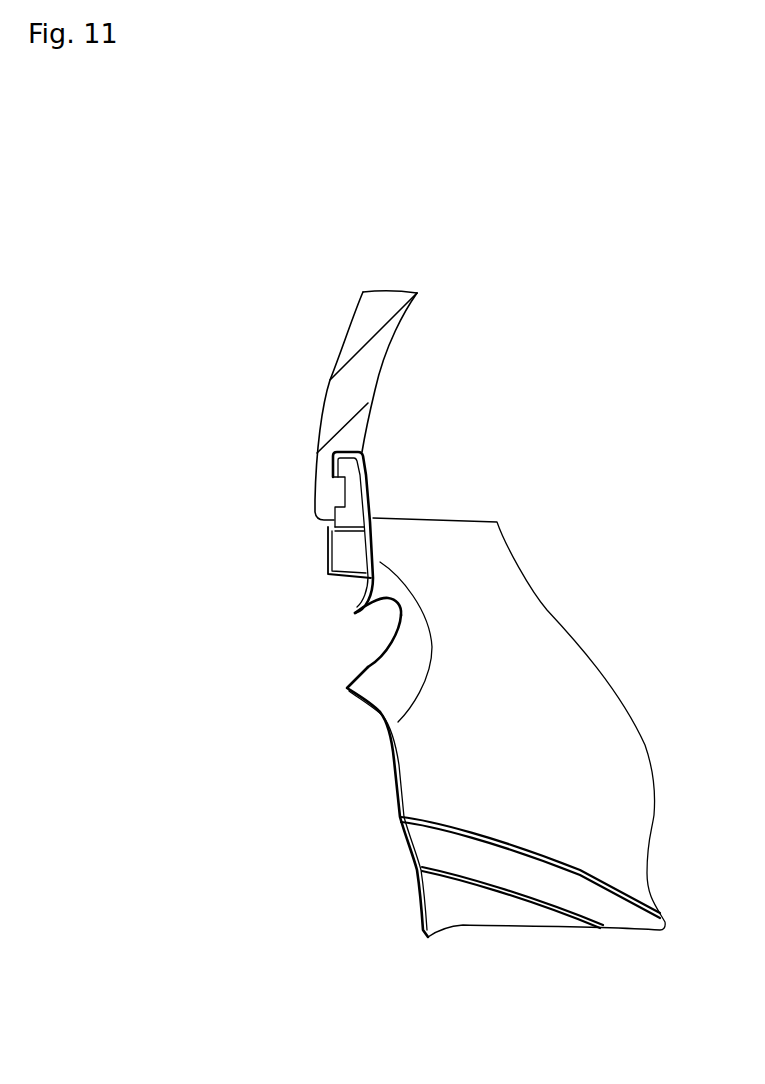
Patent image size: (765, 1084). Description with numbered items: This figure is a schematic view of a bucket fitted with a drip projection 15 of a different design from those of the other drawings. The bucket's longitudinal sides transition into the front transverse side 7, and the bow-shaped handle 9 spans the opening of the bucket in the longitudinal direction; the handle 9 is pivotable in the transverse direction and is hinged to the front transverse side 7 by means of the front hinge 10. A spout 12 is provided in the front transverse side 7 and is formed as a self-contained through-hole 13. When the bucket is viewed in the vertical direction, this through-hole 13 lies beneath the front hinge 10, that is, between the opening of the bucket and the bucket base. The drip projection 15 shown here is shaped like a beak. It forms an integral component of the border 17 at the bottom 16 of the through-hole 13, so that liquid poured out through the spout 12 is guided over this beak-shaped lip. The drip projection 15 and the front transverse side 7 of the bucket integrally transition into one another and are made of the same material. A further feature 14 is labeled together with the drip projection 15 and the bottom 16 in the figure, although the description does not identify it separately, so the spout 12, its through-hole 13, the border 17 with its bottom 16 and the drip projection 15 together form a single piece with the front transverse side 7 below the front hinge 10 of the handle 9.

The front transverse side 7 is at (449, 730).
The handle 9 is at (340, 402).
The front hinge 10 is at (328, 490).
The spout 12 is at (345, 623).
The through-hole 13 is at (342, 652).
The adhesive layer 14 is at (246, 706).
The drip projection 15 is at (246, 706).
The bottom 16 is at (368, 667).
The border 17 is at (378, 713).